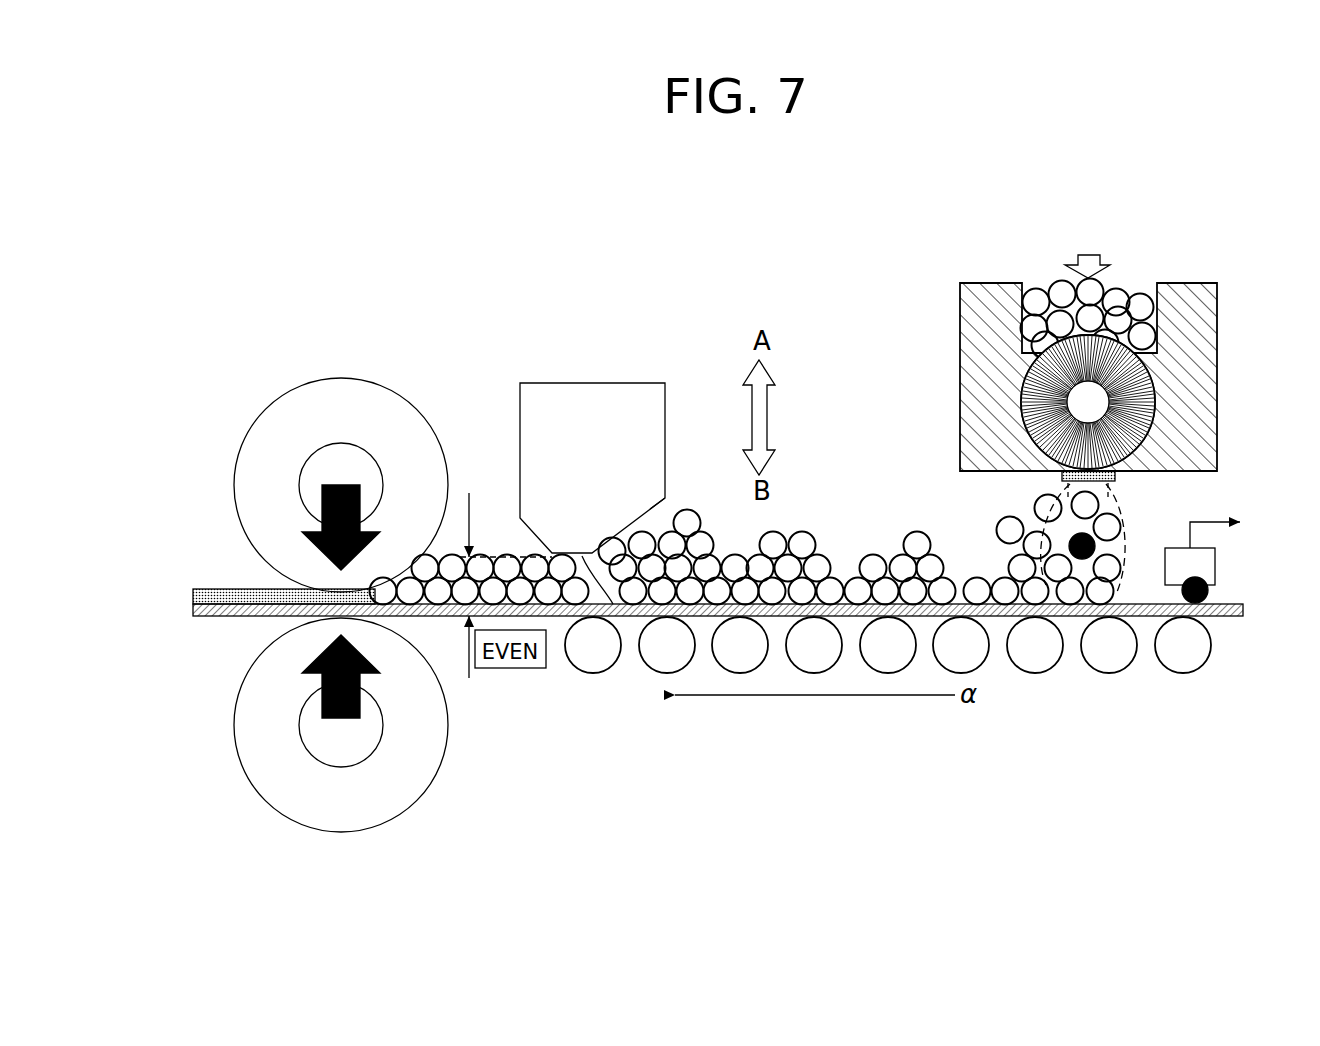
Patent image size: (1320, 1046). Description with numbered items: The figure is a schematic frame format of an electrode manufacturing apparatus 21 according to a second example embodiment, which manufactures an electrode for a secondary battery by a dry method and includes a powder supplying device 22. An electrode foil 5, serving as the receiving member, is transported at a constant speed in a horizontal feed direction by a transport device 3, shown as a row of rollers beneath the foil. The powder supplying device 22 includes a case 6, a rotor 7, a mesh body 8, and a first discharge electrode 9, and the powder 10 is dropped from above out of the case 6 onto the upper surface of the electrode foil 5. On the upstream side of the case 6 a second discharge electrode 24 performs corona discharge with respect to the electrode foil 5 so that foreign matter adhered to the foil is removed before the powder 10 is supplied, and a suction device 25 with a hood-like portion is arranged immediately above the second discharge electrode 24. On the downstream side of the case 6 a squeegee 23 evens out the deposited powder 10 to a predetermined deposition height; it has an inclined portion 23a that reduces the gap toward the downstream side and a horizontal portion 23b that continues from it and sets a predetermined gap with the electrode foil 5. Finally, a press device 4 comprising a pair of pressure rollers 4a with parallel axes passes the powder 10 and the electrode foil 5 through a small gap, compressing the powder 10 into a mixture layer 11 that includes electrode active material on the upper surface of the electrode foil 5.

The electrode manufacturing apparatus 21 is at (362, 232).
The press device 4 is at (296, 574).
The pressure rollers 4a is at (234, 478).
The mixture layer 11 is at (228, 590).
The squeegee 23 is at (594, 365).
The inclined portion 23a is at (656, 513).
The horizontal portion 23b is at (621, 618).
The powder 10 is at (1052, 275).
The powder supplying device 22 is at (1041, 394).
The case 6 is at (952, 370).
The rotor 7 is at (1163, 412).
The mesh body 8 is at (1116, 479).
The first discharge electrode 9 is at (1118, 542).
The electrode foil 5 is at (1130, 603).
The second discharge electrode 24 is at (1200, 575).
The suction device 25 is at (1200, 535).
The transport device 3 is at (1103, 680).